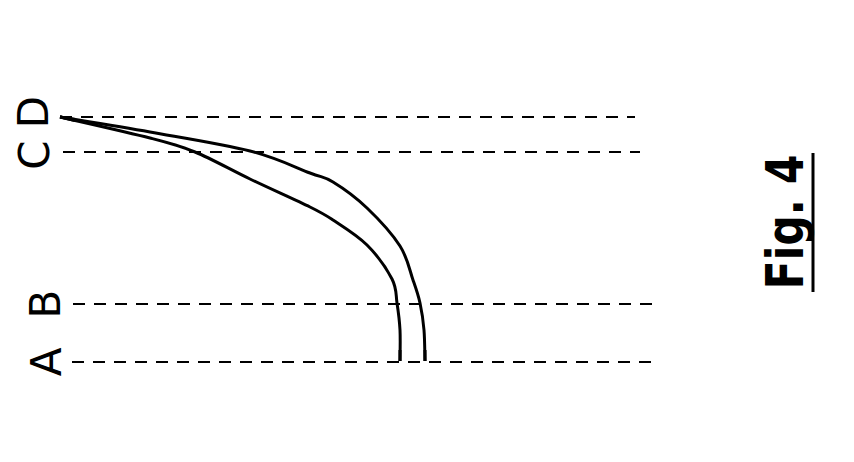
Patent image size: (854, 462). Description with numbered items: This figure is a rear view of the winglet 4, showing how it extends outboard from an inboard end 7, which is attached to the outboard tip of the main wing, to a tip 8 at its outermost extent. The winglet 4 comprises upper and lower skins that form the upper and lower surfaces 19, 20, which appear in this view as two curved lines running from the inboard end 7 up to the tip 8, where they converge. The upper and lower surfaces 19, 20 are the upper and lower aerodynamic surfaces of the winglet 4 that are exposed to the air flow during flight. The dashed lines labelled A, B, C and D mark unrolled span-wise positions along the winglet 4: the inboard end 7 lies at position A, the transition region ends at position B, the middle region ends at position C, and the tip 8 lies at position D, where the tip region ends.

The winglet 4 is at (284, 239).
The inboard end 7 is at (418, 363).
The tip 8 is at (60, 113).
The upper surface 19 is at (355, 224).
The lower surface 20 is at (405, 257).